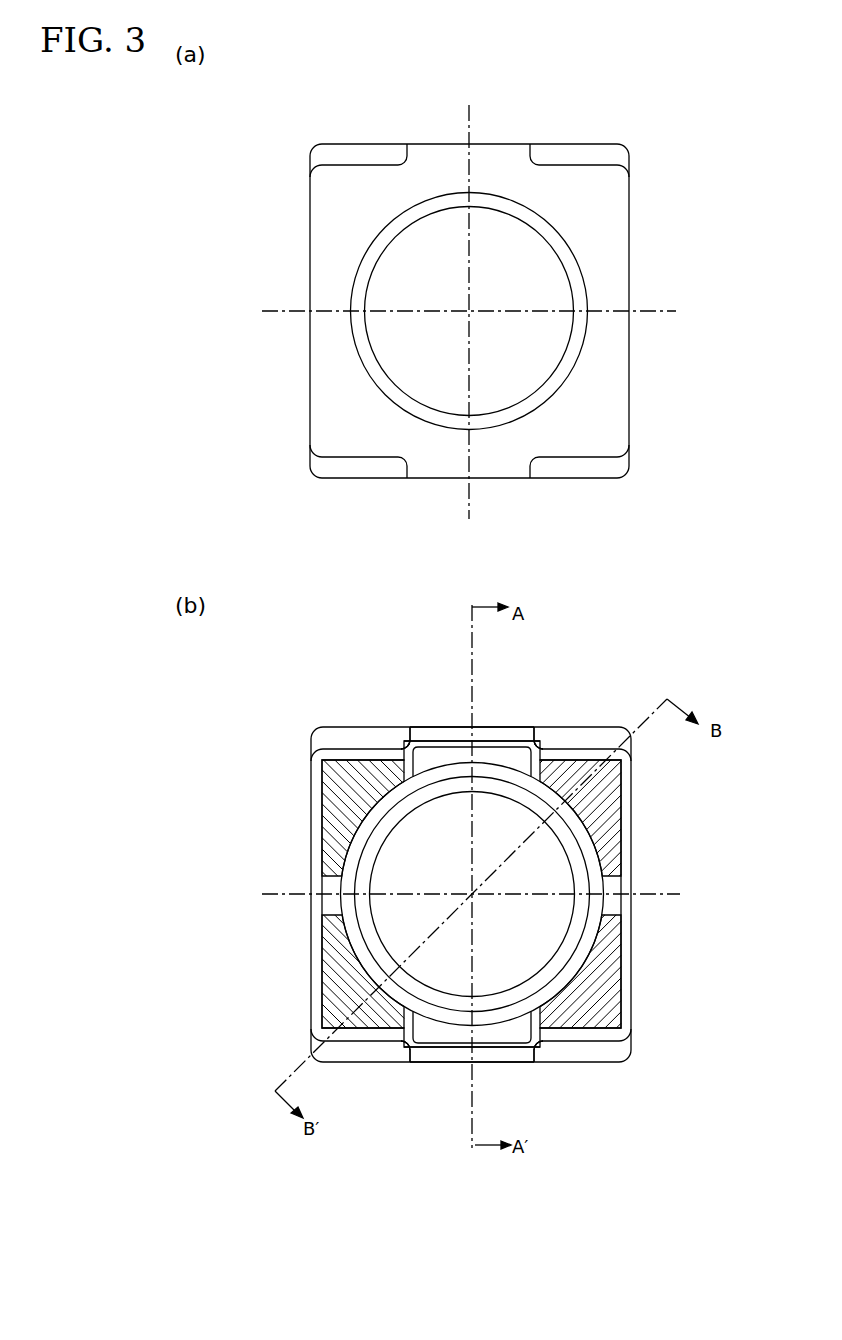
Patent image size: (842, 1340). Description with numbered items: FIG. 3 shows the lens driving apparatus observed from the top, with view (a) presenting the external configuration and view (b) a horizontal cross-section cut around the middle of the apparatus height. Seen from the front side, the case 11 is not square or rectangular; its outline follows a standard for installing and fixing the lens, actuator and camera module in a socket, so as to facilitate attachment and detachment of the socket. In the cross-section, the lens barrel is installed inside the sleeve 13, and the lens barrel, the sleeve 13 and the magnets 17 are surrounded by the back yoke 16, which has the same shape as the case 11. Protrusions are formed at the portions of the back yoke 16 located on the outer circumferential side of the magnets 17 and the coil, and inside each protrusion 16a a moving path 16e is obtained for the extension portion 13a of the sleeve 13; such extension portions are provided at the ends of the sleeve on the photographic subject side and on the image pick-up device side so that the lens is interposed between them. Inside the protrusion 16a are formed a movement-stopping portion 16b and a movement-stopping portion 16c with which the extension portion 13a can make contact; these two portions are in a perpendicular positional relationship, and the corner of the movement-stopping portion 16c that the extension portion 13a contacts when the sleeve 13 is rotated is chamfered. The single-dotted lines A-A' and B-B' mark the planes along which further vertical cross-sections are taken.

The case 11 is at (433, 180).
The sleeve 13 is at (363, 867).
The extension portion 13a is at (430, 758).
The back yoke 16 is at (547, 748).
The protrusion 16a is at (526, 867).
The movement-stopping portion 16b is at (416, 741).
The movement-stopping portion 16c is at (400, 749).
The moving path 16e is at (513, 741).
The magnet 17 is at (583, 778).